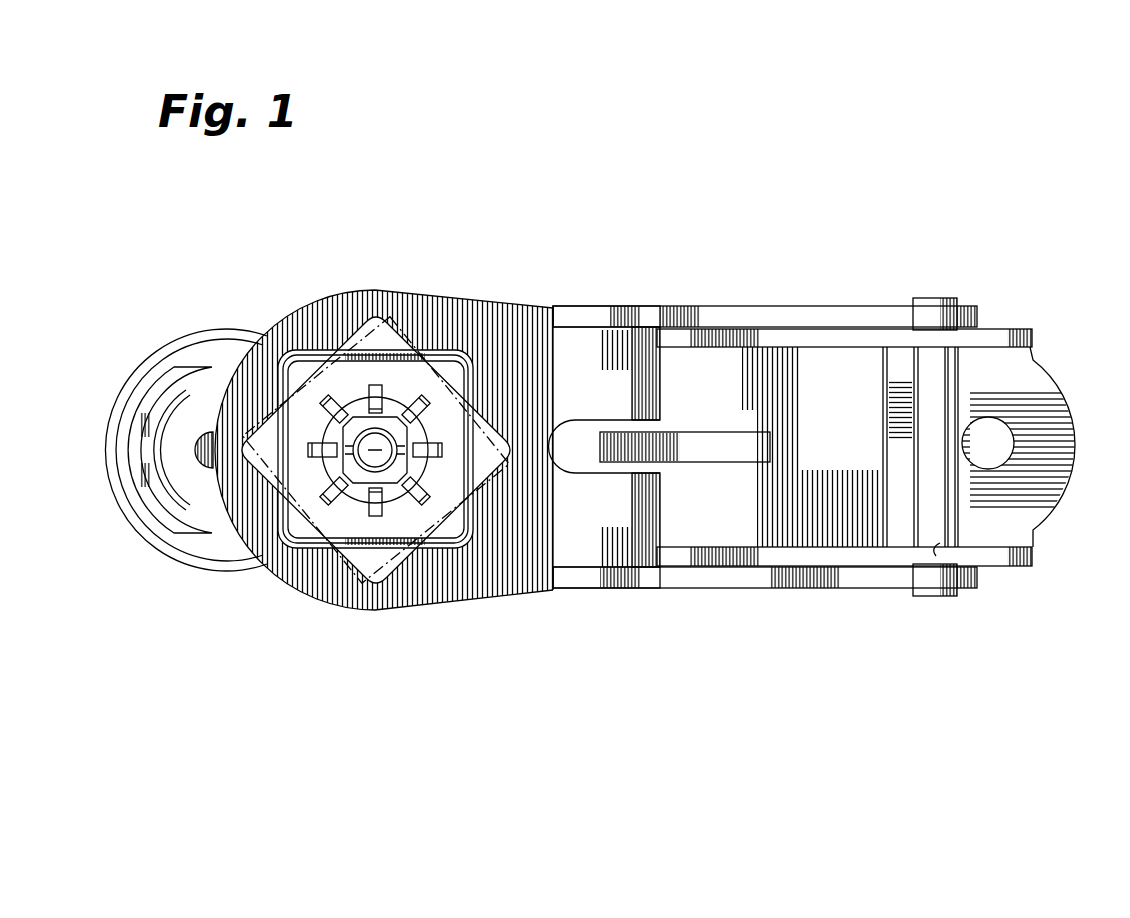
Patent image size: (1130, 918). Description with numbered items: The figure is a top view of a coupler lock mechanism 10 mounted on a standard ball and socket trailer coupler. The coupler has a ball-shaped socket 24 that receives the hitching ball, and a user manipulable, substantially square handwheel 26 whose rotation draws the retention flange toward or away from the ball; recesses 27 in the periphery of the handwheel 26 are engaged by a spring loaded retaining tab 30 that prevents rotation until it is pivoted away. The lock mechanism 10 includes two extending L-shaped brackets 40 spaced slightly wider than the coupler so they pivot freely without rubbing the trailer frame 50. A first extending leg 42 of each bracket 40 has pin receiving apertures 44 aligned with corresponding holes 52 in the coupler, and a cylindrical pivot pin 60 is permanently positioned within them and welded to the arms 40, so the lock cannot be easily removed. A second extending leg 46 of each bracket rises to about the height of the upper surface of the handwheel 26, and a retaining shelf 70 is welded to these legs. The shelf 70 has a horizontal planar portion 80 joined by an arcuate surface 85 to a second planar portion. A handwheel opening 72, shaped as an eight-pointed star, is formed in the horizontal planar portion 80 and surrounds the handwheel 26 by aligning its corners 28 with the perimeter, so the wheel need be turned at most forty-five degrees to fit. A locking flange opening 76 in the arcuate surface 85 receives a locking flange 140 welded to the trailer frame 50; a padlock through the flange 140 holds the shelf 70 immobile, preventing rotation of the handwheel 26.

The coupler lock mechanism 10 is at (516, 286).
The ball-shaped socket 24 is at (182, 366).
The handwheel 26 is at (348, 553).
The recesses 27 is at (335, 487).
The corners 28 is at (281, 330).
The spring loaded retaining tab 30 is at (186, 452).
The L-shaped brackets 40 is at (704, 300).
The first extending leg 42 is at (812, 316).
The pin receiving apertures 44 is at (913, 316).
The second extending leg 46 is at (586, 318).
The trailer frame 50 is at (852, 550).
The holes 52 is at (940, 540).
The cylindrical pivot pin 60 is at (940, 377).
The retaining shelf 70 is at (520, 603).
The handwheel opening 72 is at (388, 316).
The locking flange opening 76 is at (552, 456).
The horizontal planar portion 80 is at (589, 448).
The arcuate surface 85 is at (660, 392).
The locking flange 140 is at (687, 445).